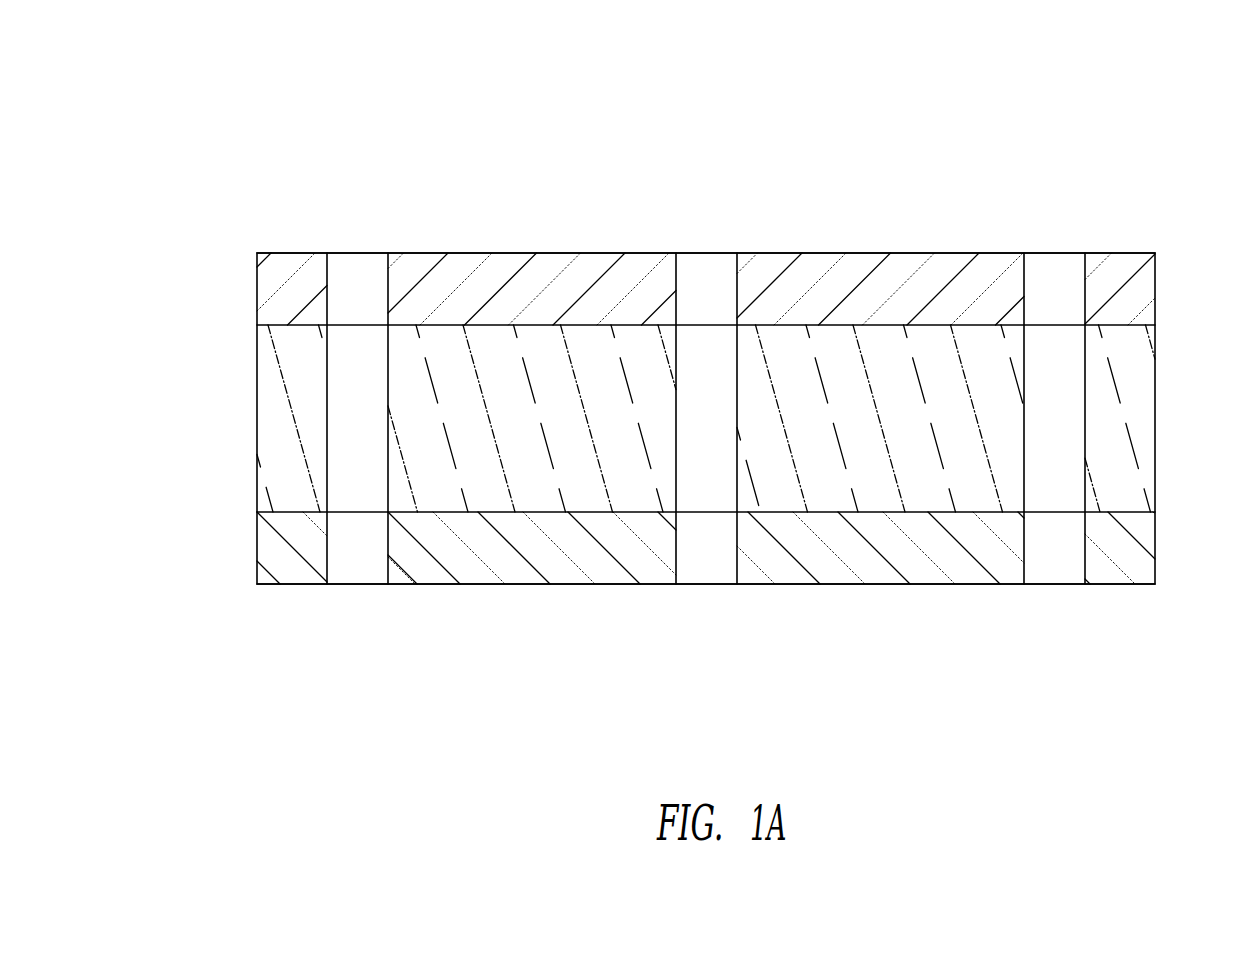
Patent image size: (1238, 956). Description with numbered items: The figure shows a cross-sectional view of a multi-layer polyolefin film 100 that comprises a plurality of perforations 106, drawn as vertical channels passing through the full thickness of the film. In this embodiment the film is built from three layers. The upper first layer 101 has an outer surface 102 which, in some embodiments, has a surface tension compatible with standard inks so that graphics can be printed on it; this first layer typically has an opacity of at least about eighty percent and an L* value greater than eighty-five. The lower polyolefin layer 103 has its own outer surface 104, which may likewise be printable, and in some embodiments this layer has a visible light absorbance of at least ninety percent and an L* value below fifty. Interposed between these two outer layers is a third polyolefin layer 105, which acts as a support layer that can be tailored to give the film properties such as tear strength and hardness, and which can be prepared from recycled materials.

The polyolefin film 100 is at (1038, 135).
The first layer 101 is at (447, 278).
The outer surface 102 is at (617, 250).
The polyolefin layer 103 is at (863, 562).
The outer surface 104 is at (478, 585).
The third polyolefin layer 105 is at (282, 432).
The perforations 106 is at (365, 610).